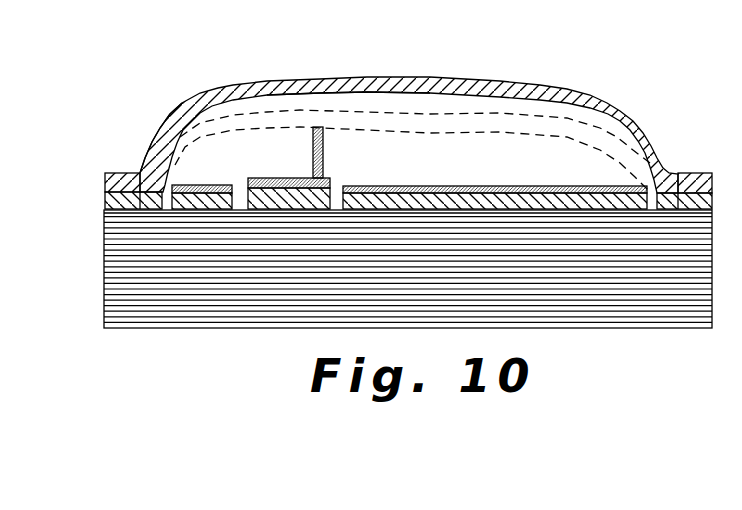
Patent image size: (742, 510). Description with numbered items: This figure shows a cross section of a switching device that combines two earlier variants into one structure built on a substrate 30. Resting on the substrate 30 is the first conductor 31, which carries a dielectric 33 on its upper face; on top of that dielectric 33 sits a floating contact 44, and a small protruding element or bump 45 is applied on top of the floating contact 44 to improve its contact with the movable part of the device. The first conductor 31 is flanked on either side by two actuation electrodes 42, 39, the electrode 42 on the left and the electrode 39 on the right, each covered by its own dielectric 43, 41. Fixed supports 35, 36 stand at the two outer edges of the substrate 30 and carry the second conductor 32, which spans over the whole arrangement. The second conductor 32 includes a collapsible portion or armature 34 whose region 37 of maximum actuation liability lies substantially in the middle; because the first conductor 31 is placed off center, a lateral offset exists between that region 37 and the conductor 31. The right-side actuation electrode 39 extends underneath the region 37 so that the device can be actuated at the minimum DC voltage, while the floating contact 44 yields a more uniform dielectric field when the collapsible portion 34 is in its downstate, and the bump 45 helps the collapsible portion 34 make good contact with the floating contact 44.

The substrate 30 is at (568, 308).
The first conductor 31 is at (495, 174).
The second conductor 32 is at (119, 173).
The dielectric 33 is at (328, 193).
The collapsible portion 34 is at (303, 92).
The fixed support 35 is at (140, 173).
The fixed support 36 is at (677, 198).
The region of maximum actuation liability 37 is at (410, 74).
The actuation electrode 39 is at (527, 193).
The dielectric 41 is at (467, 193).
The actuation electrode 42 is at (311, 129).
The dielectric 43 is at (190, 183).
The floating contact 44 is at (310, 178).
The bump 45 is at (320, 178).